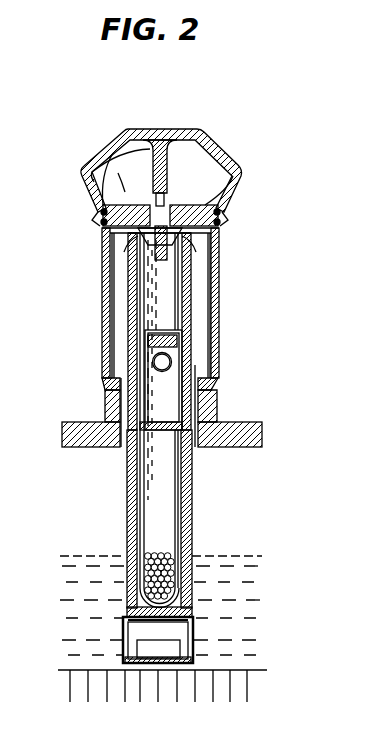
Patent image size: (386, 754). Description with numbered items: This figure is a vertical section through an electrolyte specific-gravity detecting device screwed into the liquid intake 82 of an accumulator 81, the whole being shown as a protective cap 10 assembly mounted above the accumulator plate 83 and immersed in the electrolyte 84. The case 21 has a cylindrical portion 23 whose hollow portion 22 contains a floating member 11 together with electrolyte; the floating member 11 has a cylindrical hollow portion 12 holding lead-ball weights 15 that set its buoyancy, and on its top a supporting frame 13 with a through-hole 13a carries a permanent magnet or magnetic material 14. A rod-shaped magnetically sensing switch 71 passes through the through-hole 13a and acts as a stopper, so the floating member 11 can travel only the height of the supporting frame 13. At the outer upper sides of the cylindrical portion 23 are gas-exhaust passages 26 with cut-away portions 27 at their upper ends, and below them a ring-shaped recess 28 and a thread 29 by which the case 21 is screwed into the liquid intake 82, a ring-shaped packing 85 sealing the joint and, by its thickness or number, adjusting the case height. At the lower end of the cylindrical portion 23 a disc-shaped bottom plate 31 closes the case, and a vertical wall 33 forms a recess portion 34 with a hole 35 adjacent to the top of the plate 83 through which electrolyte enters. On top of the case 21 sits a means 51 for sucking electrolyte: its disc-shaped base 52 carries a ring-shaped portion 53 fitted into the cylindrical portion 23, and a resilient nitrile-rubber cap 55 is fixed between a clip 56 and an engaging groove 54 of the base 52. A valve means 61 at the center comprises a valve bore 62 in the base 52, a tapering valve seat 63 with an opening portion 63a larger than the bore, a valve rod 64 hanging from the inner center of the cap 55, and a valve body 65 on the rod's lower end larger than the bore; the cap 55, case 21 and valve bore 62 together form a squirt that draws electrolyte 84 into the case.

The protective cap 10 is at (222, 143).
The floating member 11 is at (172, 472).
The cylindrical hollow portion 12 is at (188, 497).
The supporting frame 13 is at (183, 364).
The through-hole 13a is at (200, 378).
The permanent magnet or magnetic material 14 is at (179, 337).
The weights 15 is at (157, 550).
The case 21 is at (127, 515).
The hollow portion 22 is at (140, 467).
The cylindrical portion 23 is at (130, 490).
The passages 26 is at (108, 312).
The cut-away portions 27 is at (102, 230).
The recess 28 is at (214, 388).
The thread 29 is at (212, 412).
The bottom plate 31 is at (152, 662).
The vertical wall 33 is at (192, 629).
The recess portion 34 is at (124, 628).
The hole 35 is at (165, 658).
The means for sucking the electrolyte 51 is at (165, 130).
The base 52 is at (202, 205).
The ring-shaped portion 53 is at (128, 238).
The engaging groove 54 is at (102, 223).
The resilient cap 55 is at (113, 144).
The clip 56 is at (98, 214).
The valve means 61 is at (209, 292).
The valve bore 62 is at (173, 203).
The tapering valve seat 63 is at (190, 234).
The opening portion 63a is at (130, 262).
The valve rod 64 is at (152, 166).
The valve body 65 is at (211, 271).
The magnetically sensing switch 71 is at (156, 362).
The accumulator 81 is at (263, 438).
The liquid intake 82 is at (112, 400).
The plate 83 is at (240, 680).
The electrolyte 84 is at (246, 558).
The packing 85 is at (110, 381).